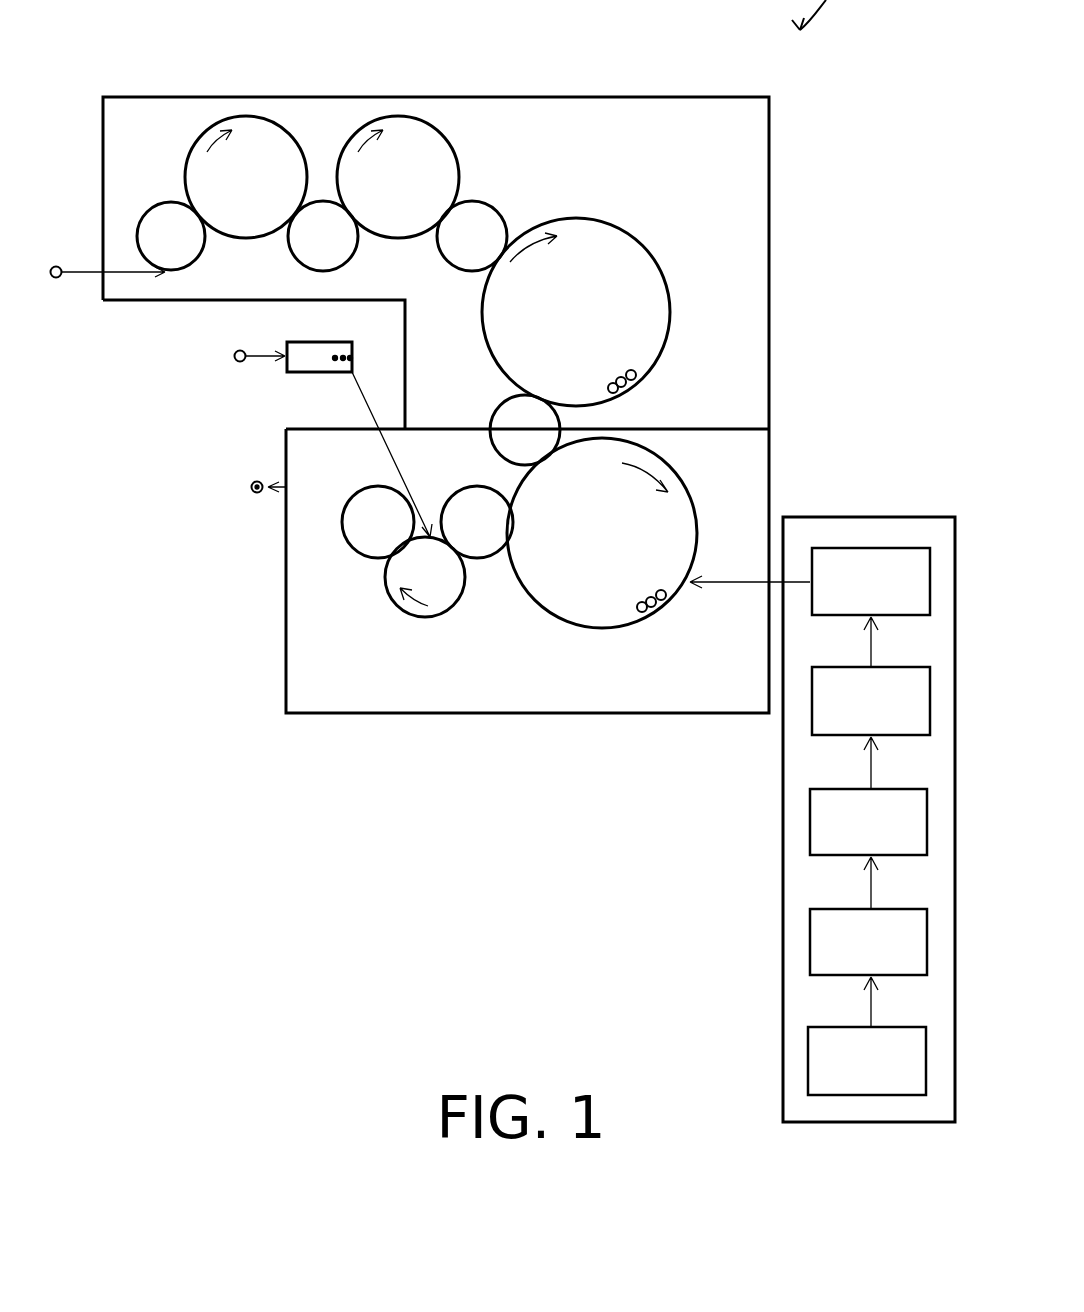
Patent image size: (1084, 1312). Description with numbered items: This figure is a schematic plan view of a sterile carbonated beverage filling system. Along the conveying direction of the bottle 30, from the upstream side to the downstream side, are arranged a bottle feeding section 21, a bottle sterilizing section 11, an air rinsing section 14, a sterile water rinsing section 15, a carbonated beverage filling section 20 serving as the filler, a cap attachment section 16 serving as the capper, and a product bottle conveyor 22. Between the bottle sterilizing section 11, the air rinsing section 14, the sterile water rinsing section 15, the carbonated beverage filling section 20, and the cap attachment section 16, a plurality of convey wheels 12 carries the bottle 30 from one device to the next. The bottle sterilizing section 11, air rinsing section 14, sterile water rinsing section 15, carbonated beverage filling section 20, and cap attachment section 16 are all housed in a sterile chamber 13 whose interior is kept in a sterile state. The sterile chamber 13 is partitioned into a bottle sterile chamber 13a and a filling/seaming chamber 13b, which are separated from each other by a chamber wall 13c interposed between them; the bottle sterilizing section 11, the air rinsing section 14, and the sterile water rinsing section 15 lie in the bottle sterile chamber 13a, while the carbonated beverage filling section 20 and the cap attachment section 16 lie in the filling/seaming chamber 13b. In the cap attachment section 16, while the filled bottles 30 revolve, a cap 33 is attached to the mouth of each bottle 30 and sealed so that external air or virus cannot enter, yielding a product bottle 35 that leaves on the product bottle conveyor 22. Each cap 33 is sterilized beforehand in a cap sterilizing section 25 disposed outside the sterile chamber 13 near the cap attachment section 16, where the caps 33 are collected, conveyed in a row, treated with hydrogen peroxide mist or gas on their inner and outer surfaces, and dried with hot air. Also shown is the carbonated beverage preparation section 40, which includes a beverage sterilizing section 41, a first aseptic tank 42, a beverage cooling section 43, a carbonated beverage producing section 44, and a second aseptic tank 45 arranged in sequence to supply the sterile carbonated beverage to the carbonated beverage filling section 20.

The bottle sterilizing section 11 is at (272, 124).
The convey wheel 12 is at (150, 226).
The sterile chamber 13 is at (509, 405).
The bottle sterile chamber 13a is at (769, 393).
The filling/seaming chamber 13b is at (769, 453).
The chamber wall 13c is at (726, 425).
The air rinsing section 14 is at (396, 122).
The sterile water rinsing section 15 is at (614, 240).
The cap attachment section 16 is at (390, 585).
The carbonated beverage filling section 20 is at (685, 528).
The bottle feeding section 21 is at (100, 280).
The product bottle conveyor 22 is at (284, 480).
The cap sterilizing section 25 is at (305, 372).
The bottle 30 is at (56, 265).
The cap 33 is at (240, 362).
The product bottle 35 is at (213, 578).
The carbonated beverage preparation section 40 is at (748, 1022).
The beverage sterilizing section 41 is at (856, 1075).
The first aseptic tank 42 is at (856, 956).
The beverage cooling section 43 is at (856, 836).
The carbonated beverage producing section 44 is at (856, 715).
The second aseptic tank 45 is at (856, 595).